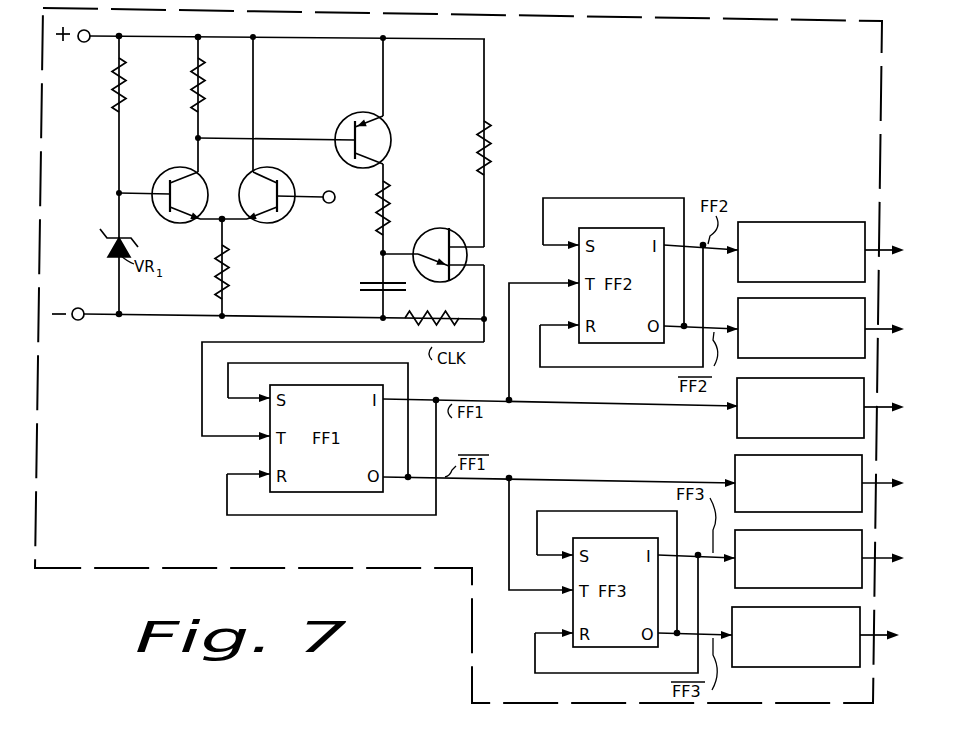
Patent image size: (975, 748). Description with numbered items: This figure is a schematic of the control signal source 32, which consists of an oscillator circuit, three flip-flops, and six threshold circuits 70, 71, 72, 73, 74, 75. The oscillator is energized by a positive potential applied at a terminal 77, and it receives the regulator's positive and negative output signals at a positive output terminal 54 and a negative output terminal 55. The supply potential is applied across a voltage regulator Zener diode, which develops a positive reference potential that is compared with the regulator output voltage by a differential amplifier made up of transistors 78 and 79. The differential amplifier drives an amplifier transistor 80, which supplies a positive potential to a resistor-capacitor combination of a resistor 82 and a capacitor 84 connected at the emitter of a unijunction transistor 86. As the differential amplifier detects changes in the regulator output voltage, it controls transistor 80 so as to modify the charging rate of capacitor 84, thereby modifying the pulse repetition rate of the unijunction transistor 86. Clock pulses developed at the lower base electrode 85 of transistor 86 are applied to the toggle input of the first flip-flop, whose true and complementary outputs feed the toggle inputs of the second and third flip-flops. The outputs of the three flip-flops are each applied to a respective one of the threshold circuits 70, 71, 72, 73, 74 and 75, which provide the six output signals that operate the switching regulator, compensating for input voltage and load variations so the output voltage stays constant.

The control signal source 32 is at (832, 21).
The terminal 77 is at (82, 43).
The negative output terminal 55 is at (77, 321).
The positive output terminal 54 is at (329, 204).
The transistor 78 is at (174, 168).
The transistor 79 is at (245, 172).
The amplifier transistor 80 is at (347, 118).
The resistor 82 is at (386, 207).
The capacitor 84 is at (360, 287).
The lower base electrode 85 is at (466, 268).
The unijunction transistor 86 is at (469, 241).
The threshold circuit 70 is at (871, 230).
The threshold circuit 71 is at (866, 322).
The threshold circuit 72 is at (865, 402).
The threshold circuit 73 is at (863, 478).
The threshold circuit 74 is at (863, 553).
The threshold circuit 75 is at (861, 630).